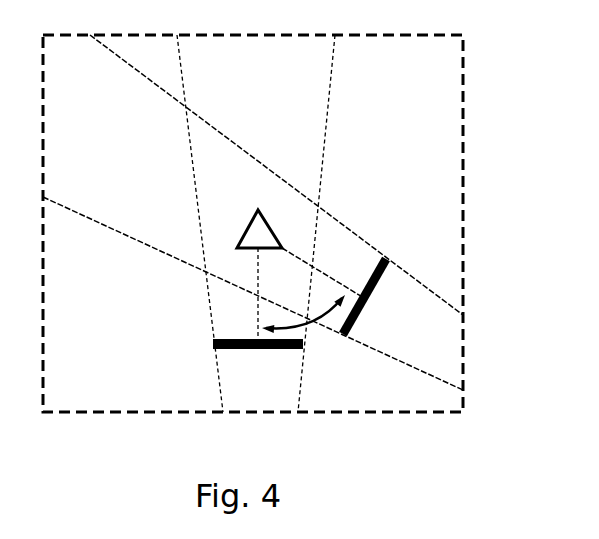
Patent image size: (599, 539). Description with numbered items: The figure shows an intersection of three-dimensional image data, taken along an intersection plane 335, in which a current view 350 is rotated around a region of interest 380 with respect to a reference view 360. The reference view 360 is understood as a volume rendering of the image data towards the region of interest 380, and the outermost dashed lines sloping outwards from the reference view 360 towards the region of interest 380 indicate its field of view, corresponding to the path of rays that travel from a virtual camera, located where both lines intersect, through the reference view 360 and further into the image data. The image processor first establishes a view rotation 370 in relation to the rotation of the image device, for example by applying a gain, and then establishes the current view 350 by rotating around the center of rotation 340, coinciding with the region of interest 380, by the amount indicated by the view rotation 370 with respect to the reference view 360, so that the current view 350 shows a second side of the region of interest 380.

The intersection plane 335 is at (470, 337).
The center of rotation 340 is at (271, 178).
The region of interest 380 is at (257, 202).
The current view 350 is at (375, 255).
The reference view 360 is at (221, 337).
The view rotation 370 is at (316, 326).